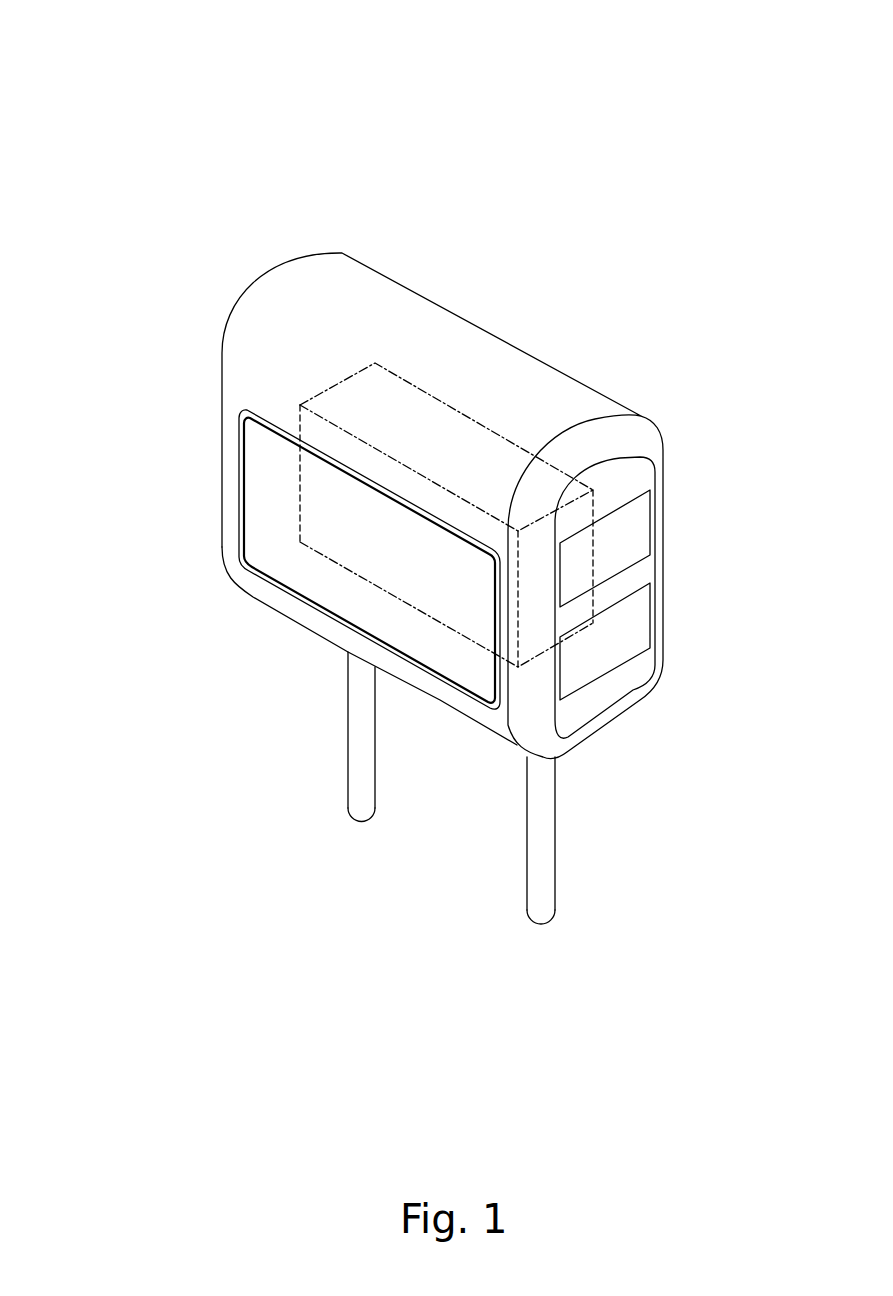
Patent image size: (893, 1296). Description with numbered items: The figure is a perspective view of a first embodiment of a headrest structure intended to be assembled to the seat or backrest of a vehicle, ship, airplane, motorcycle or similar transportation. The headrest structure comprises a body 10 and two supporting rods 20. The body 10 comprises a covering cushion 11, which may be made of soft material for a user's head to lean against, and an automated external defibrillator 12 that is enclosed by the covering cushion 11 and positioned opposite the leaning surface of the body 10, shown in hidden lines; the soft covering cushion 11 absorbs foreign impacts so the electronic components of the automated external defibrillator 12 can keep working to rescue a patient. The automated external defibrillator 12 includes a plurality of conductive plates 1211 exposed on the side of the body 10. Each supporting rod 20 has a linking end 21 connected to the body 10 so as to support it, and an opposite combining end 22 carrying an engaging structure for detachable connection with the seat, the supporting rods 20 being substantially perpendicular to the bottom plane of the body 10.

The body 10 is at (504, 486).
The covering cushion 11 is at (563, 393).
The automated external defibrillator 12 is at (380, 400).
The conductive plates 1211 is at (638, 522).
The supporting rod 20 is at (455, 838).
The linking end 21 is at (365, 686).
The combining end 22 is at (362, 813).